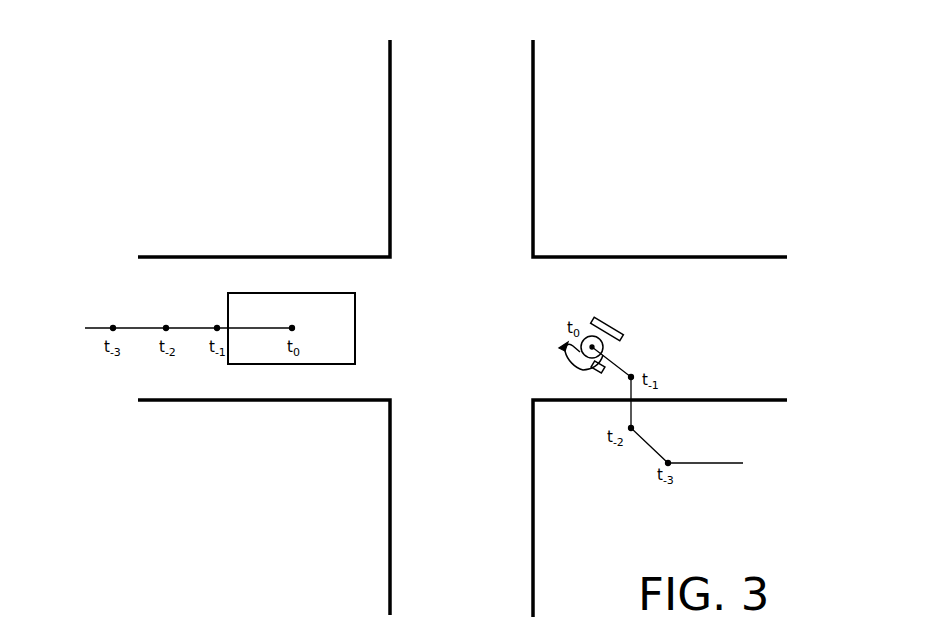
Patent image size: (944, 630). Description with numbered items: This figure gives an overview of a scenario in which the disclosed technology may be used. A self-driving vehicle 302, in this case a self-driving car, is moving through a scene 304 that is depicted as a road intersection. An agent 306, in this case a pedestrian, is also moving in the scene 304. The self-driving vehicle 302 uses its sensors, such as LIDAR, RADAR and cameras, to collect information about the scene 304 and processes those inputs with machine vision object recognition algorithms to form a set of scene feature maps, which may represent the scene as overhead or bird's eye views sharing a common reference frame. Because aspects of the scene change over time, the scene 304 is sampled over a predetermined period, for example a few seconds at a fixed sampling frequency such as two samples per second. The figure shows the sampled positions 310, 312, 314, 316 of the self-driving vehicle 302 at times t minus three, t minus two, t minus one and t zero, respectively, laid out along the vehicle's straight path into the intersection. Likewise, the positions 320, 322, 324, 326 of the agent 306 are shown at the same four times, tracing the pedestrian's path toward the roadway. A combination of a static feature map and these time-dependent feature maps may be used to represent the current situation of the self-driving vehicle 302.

The self-driving vehicle 302 is at (333, 317).
The scene 304 is at (238, 122).
The agent 306 is at (592, 347).
The position 310 is at (113, 328).
The position 312 is at (166, 328).
The position 314 is at (217, 328).
The position 316 is at (292, 328).
The position 320 is at (668, 463).
The position 322 is at (631, 428).
The position 324 is at (630, 377).
The position 326 is at (583, 348).